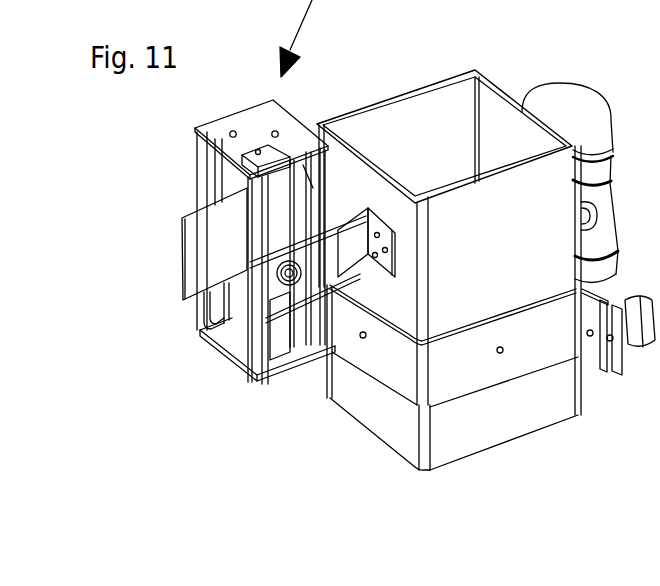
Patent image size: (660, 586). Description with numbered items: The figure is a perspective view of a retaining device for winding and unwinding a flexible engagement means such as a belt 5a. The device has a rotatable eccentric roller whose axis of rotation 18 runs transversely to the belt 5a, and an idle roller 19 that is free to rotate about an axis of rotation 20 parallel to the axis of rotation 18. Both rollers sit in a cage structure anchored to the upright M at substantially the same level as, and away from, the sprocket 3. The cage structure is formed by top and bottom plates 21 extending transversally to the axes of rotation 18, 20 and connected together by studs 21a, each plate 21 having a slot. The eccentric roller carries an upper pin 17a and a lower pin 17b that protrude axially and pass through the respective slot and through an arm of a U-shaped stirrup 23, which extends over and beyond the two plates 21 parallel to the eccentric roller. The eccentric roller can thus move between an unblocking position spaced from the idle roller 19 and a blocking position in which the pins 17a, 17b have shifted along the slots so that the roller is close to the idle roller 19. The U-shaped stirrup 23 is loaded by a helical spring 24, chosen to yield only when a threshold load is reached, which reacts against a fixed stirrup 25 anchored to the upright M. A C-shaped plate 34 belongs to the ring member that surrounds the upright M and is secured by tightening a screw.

The sprocket 3 is at (607, 200).
The belt 5a is at (212, 255).
The upper pin 17a is at (244, 153).
The lower pin 17b is at (263, 373).
The axis of rotation 18 is at (258, 148).
The idle roller 19 is at (237, 187).
The axis of rotation 20 is at (233, 130).
The top and bottom plates 21 is at (215, 135).
The studs 21a is at (200, 313).
The U-shaped stirrup 23 is at (280, 353).
The helical spring 24 is at (258, 330).
The stirrup 25 is at (300, 355).
The C-shaped plate 34 is at (397, 367).
The upright M is at (540, 343).